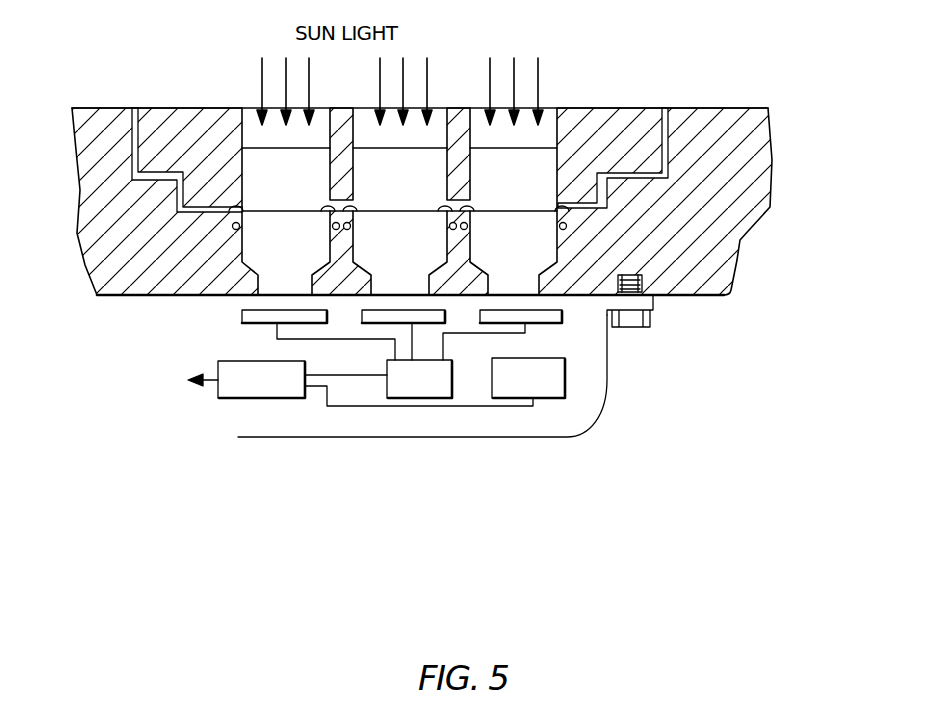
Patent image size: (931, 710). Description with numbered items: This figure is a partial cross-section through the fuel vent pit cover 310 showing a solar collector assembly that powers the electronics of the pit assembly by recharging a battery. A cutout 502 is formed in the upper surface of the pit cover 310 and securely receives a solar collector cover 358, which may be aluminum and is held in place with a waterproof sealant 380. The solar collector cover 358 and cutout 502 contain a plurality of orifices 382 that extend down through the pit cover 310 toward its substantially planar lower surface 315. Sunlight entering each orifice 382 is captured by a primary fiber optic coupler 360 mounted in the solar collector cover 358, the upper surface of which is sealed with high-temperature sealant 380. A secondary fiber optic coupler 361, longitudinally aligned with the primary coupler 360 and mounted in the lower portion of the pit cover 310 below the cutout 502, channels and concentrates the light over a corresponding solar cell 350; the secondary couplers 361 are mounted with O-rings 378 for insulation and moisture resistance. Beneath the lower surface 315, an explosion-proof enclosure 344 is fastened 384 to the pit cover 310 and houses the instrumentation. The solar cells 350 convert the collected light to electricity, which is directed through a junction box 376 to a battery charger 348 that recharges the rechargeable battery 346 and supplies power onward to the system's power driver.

The pit cover 310 is at (700, 120).
The lower surface 315 is at (720, 296).
The enclosure 344 is at (382, 440).
The rechargeable battery 346 is at (565, 383).
The battery charger 348 is at (266, 400).
The solar cell 350 is at (563, 312).
The solar collector cover 358 is at (573, 103).
The primary fiber optic coupler 360 is at (260, 173).
The secondary fiber optic coupler 361 is at (530, 248).
The junction box 376 is at (450, 400).
The O-ring 378 is at (565, 224).
The sealant 380 is at (313, 208).
The orifice 382 is at (250, 128).
The fastener 384 is at (628, 321).
The cutout 502 is at (668, 157).